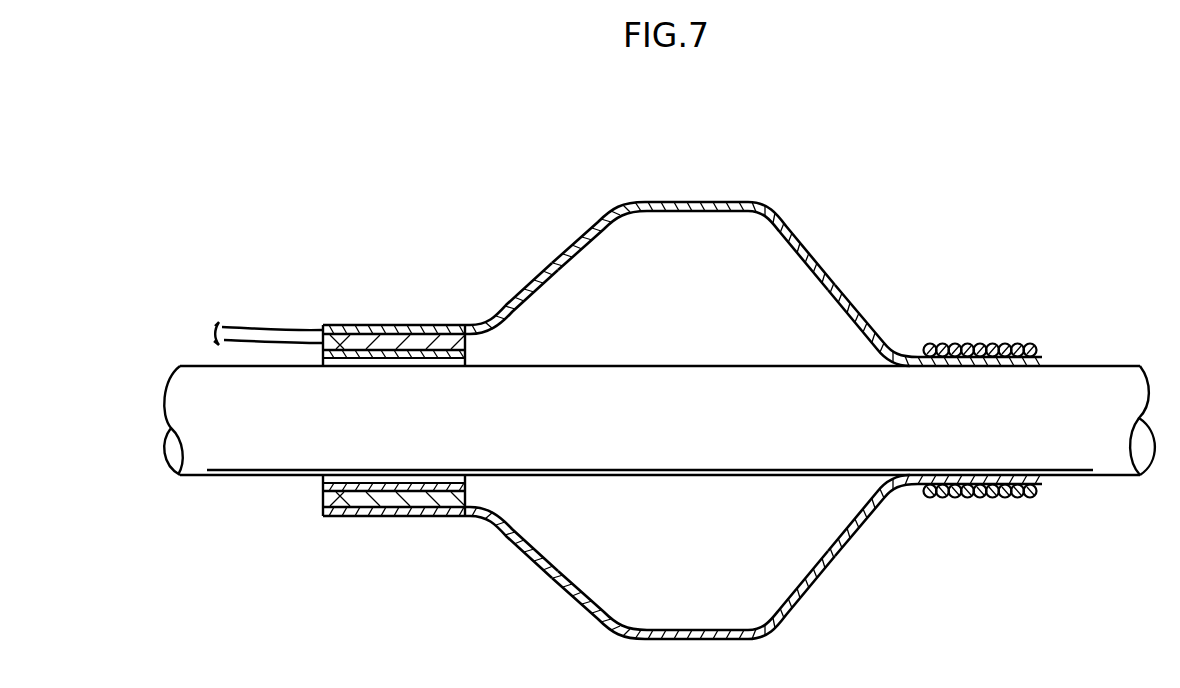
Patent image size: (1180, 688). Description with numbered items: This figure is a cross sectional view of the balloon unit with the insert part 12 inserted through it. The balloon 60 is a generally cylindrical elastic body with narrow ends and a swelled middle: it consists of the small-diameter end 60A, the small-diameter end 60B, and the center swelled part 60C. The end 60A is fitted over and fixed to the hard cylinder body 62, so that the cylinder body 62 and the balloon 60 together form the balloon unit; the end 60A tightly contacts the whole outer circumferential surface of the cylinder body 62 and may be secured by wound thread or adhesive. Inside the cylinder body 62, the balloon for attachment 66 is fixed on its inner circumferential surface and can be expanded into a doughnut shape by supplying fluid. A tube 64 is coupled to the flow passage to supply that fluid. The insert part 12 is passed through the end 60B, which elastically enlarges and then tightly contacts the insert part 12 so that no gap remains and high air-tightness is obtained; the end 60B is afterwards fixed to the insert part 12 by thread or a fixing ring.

The insert part 12 is at (247, 472).
The balloon 60 is at (682, 377).
The end of the balloon 60A is at (437, 326).
The end of the balloon 60B is at (990, 344).
The center swelled part 60C is at (773, 206).
The cylinder body 62 is at (343, 341).
The tube 64 is at (250, 336).
The balloon for attachment 66 is at (437, 363).